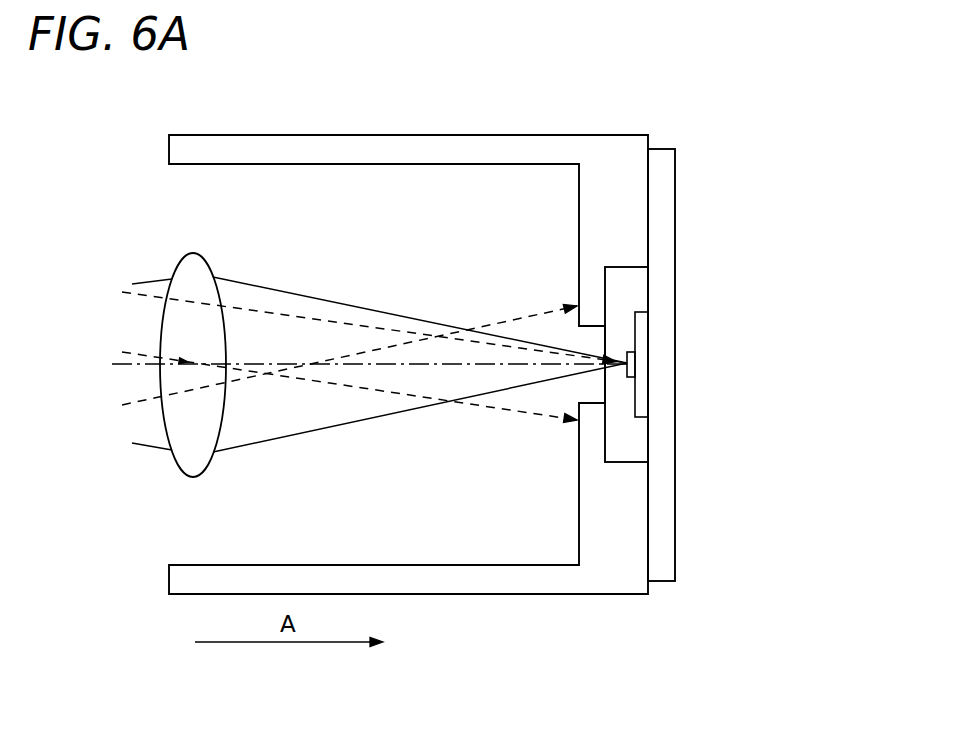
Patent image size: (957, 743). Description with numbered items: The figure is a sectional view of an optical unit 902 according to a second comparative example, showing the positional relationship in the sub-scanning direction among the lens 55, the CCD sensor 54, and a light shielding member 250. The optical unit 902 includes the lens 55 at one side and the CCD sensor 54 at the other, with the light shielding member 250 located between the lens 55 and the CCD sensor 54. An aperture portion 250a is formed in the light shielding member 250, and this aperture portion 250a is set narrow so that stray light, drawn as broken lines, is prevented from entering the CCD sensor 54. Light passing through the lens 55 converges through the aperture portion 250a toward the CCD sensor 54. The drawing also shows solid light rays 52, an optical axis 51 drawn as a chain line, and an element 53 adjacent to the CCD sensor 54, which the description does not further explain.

The optical unit 902 is at (485, 352).
The light shielding member 250 is at (601, 150).
The aperture portion 250a is at (602, 333).
The lens 55 is at (193, 266).
The light flux 52 is at (336, 300).
The optical axis 51 is at (437, 368).
The image sensor 53 is at (644, 366).
The CCD sensor 54 is at (647, 405).